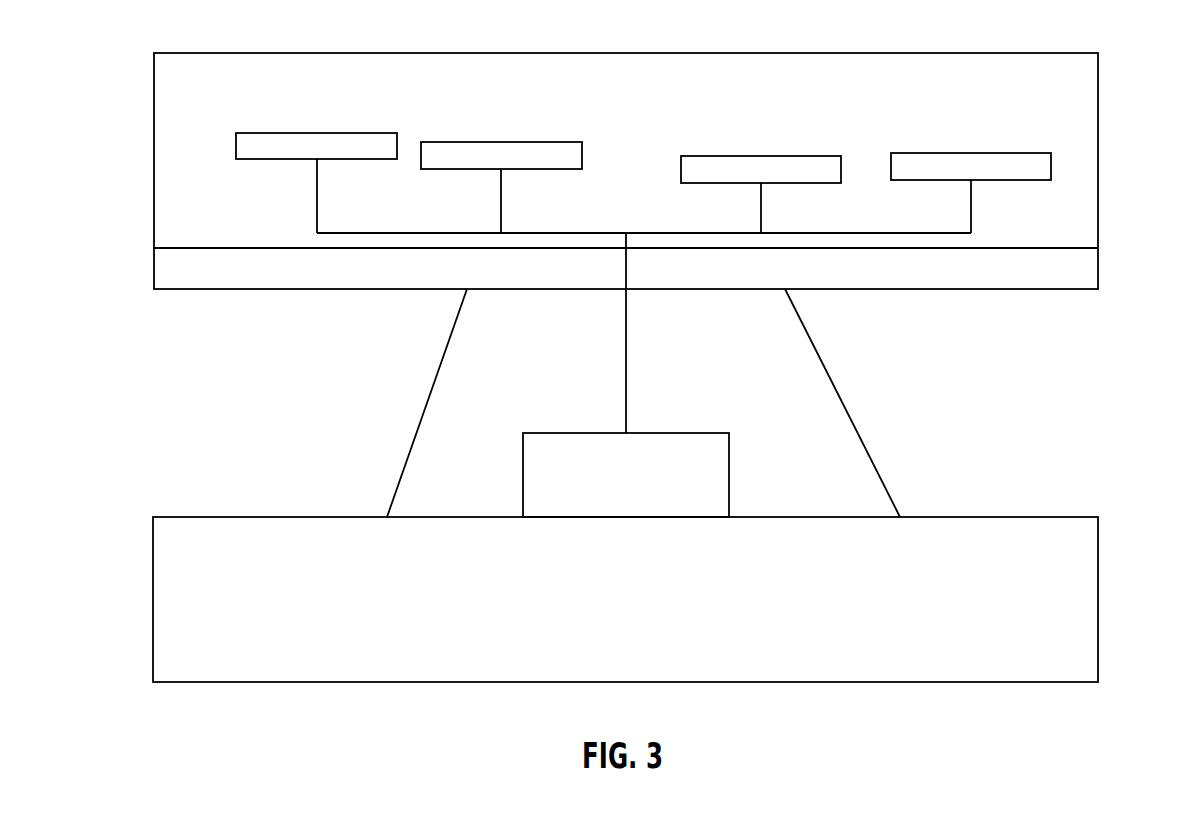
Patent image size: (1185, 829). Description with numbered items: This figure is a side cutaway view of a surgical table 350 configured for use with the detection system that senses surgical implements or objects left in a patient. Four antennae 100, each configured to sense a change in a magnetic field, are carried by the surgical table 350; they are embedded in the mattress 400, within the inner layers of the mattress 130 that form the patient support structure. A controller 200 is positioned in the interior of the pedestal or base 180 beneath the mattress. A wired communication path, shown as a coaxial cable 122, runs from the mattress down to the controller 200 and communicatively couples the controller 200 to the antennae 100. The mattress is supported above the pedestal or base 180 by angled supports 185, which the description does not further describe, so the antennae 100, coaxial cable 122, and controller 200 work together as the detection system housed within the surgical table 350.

The mattress 400 is at (152, 104).
The mattress 130 is at (1085, 268).
The antenna 100 is at (300, 133).
The coaxial cable 122 is at (627, 349).
The controller 200 is at (731, 481).
The support 185 is at (430, 395).
The pedestal or base 180 is at (152, 600).
The surgical table 350 is at (118, 373).